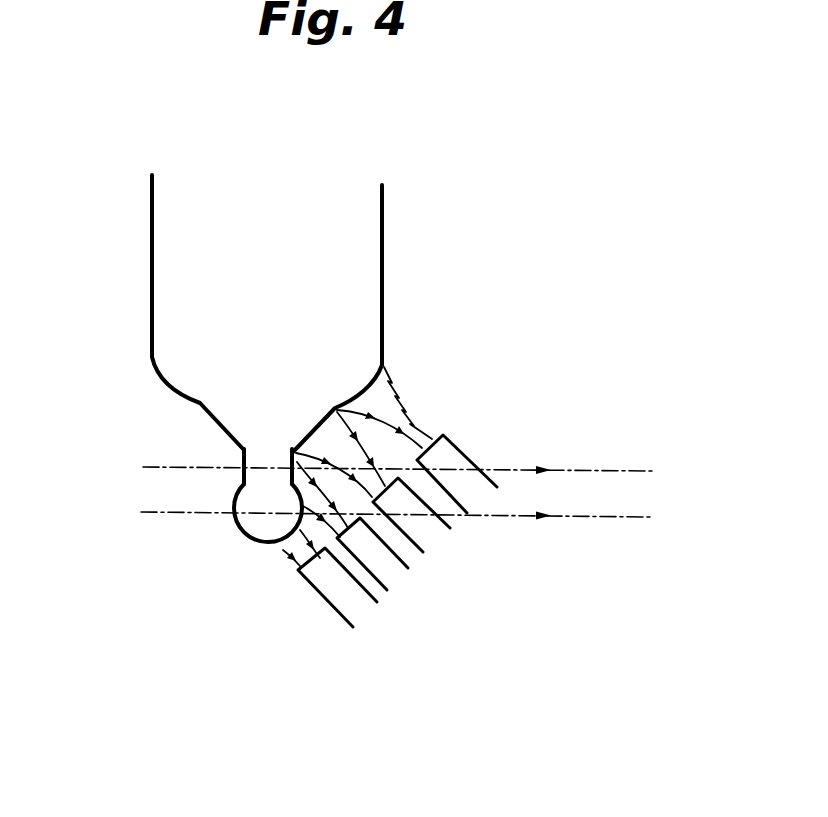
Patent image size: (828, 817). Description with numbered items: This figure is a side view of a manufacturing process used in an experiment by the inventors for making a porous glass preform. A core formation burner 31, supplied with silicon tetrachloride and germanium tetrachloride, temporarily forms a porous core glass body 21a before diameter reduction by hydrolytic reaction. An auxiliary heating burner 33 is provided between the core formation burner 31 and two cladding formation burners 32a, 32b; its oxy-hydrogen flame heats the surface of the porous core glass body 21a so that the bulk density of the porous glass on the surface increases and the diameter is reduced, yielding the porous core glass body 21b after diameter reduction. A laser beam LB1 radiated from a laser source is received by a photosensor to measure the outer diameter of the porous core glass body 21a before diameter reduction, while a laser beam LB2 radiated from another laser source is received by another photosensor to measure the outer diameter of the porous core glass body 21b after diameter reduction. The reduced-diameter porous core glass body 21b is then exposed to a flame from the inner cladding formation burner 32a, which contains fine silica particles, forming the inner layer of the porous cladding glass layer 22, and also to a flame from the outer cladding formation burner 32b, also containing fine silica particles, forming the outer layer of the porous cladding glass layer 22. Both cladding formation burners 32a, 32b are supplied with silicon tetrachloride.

The porous cladding glass layer 22 is at (370, 230).
The porous core glass body after diameter reduction 21b is at (243, 469).
The porous core glass body before diameter reduction 21a is at (257, 525).
The core formation burner 31 is at (360, 607).
The auxiliary heating burner 33 is at (393, 570).
The inner cladding formation burner 32a is at (428, 533).
The outer cladding formation burner 32b is at (460, 455).
The laser beam LB1 is at (600, 517).
The laser beam LB2 is at (612, 471).